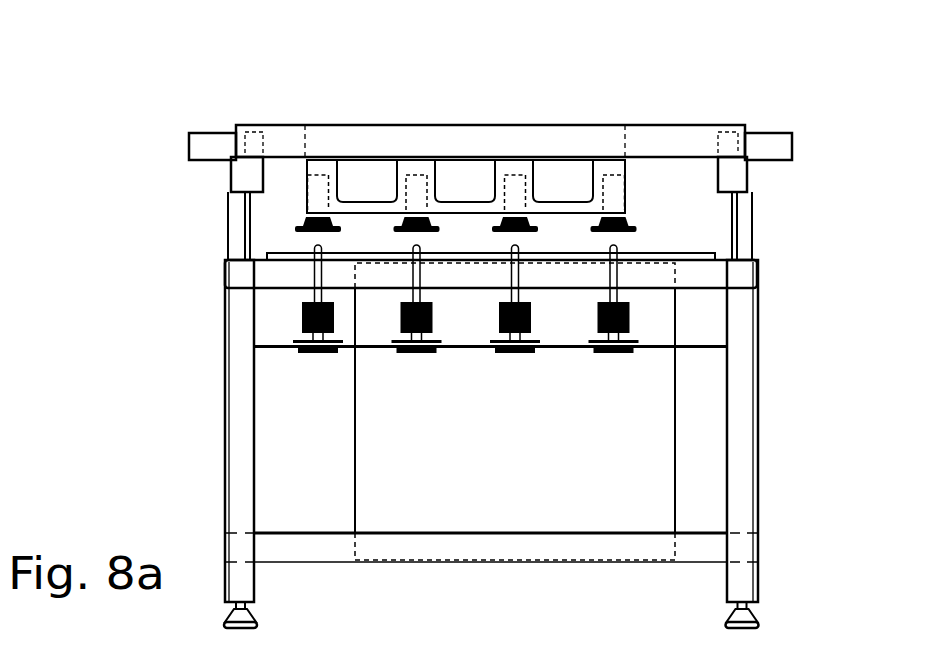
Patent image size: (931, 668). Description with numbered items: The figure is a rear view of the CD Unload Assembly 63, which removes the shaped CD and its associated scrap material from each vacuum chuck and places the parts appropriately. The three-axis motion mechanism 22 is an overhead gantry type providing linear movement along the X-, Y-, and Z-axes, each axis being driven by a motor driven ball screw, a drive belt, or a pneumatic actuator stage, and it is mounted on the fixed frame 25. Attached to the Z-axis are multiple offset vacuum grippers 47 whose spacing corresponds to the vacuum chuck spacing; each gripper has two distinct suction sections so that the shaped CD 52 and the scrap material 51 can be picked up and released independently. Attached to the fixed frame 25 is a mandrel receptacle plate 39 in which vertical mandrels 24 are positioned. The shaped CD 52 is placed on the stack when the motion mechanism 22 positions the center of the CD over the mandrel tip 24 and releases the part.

The CD Unload Assembly 63 is at (203, 63).
The 3-Axis motion mechanism 22 is at (507, 138).
The vacuum grippers 47 is at (630, 222).
The scrap material 51 is at (315, 232).
The vertical mandrels 24 is at (315, 278).
The fixed frame 25 is at (747, 422).
The mandrel receptacle plate 39 is at (278, 347).
The shaped CD 52 is at (302, 315).